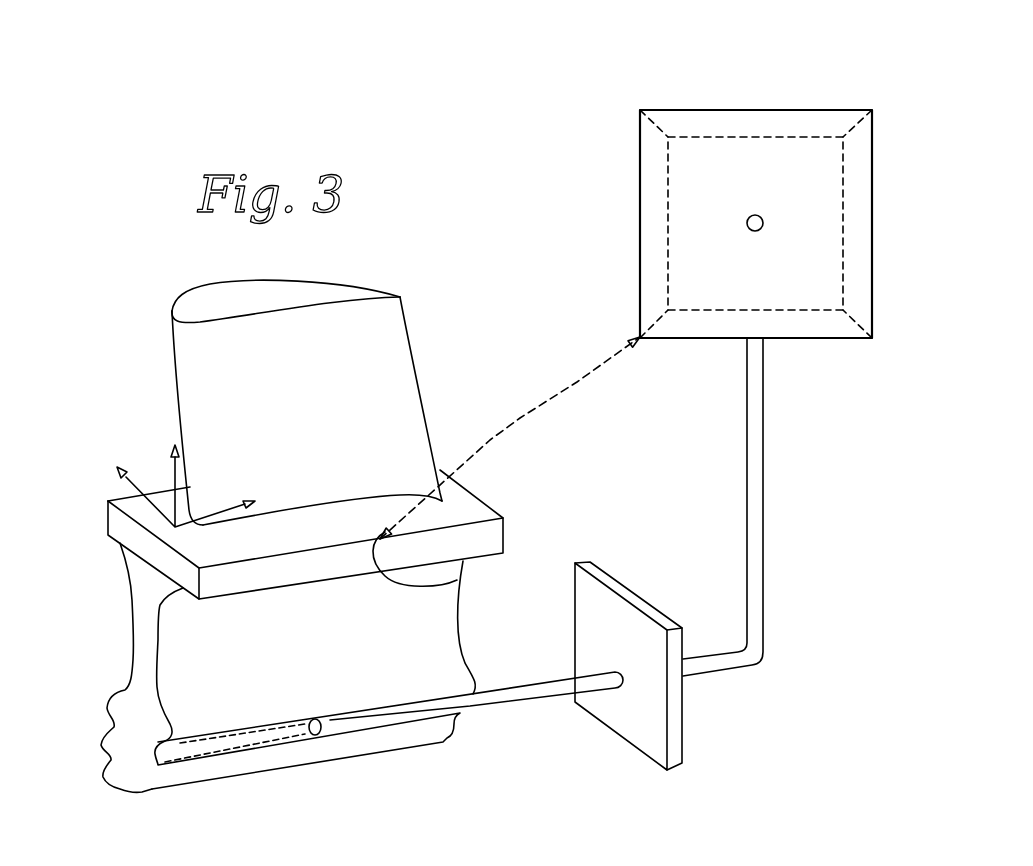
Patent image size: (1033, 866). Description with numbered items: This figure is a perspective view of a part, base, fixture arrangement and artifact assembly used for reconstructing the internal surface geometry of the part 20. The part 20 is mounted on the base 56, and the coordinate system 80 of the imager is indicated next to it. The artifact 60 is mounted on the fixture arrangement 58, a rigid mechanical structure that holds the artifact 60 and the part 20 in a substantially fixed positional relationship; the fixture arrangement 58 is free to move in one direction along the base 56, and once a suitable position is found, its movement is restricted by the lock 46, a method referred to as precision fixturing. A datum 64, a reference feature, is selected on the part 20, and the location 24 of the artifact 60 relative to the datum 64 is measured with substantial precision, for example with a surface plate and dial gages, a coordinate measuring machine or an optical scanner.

The part 20 is at (350, 313).
The location 24 is at (547, 403).
The lock 46 is at (685, 750).
The base 56 is at (117, 630).
The fixture arrangement 58 is at (765, 433).
The artifact 60 is at (600, 138).
The datum 64 is at (457, 580).
The coordinate system 80 is at (130, 452).